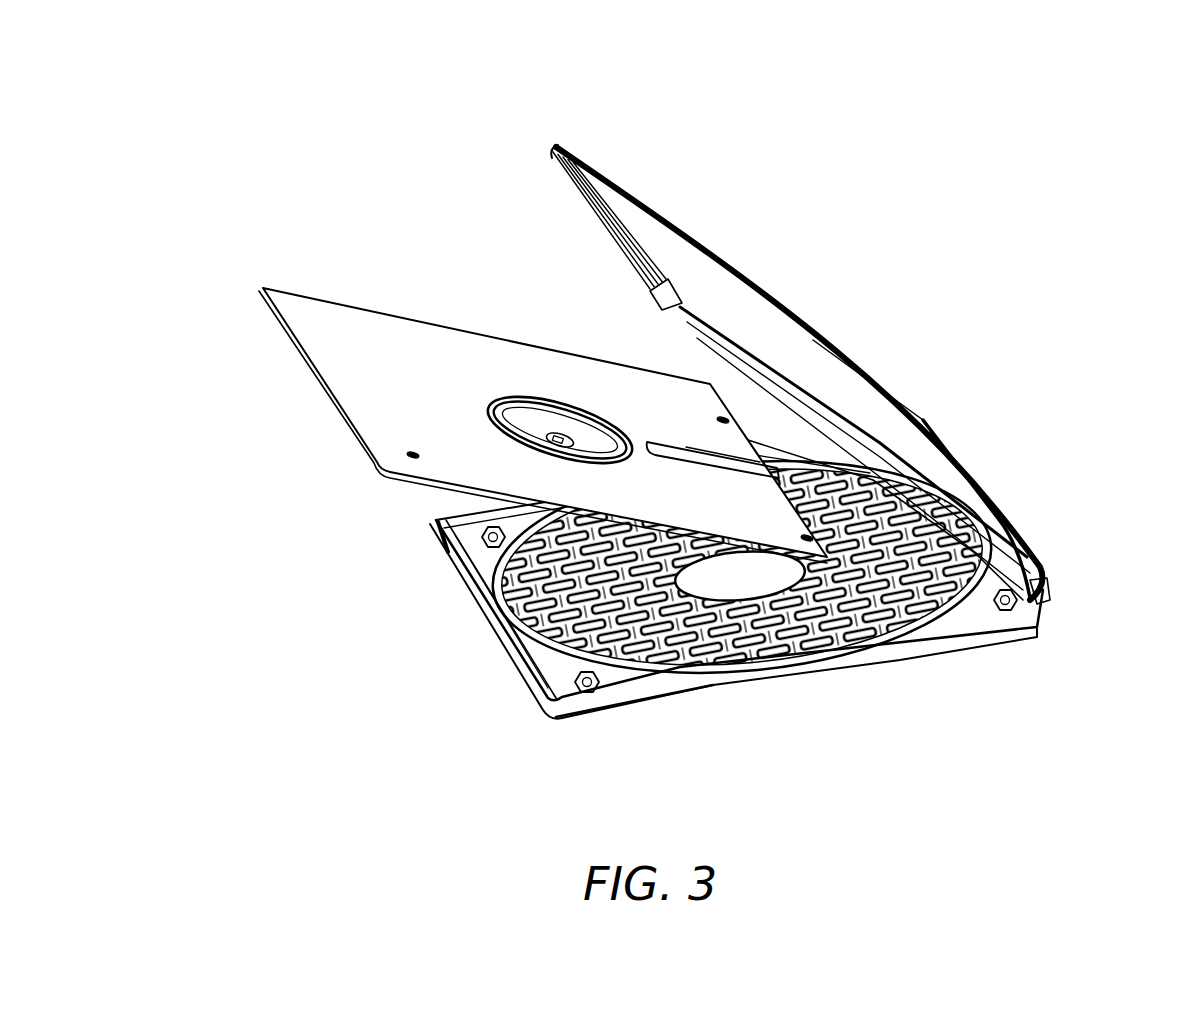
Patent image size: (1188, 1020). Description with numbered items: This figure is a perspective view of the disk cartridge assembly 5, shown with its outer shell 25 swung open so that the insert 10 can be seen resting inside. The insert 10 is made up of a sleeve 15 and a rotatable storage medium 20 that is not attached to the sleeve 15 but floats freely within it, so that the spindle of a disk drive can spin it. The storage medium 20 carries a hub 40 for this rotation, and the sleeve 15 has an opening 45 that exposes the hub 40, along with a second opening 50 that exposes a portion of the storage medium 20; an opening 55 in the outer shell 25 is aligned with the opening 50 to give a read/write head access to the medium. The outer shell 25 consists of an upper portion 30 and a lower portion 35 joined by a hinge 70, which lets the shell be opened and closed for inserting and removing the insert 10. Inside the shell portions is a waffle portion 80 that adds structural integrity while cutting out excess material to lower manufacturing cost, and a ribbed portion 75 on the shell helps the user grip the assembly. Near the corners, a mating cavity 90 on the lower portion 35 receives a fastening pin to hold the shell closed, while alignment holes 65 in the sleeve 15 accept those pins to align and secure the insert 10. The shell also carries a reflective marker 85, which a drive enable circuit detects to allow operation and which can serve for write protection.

The disk cartridge assembly 5 is at (952, 107).
The insert 10 is at (302, 410).
The sleeve 15 is at (380, 303).
The rotatable storage medium 20 is at (652, 446).
The outer shell 25 is at (683, 224).
The upper portion 30 is at (815, 332).
The lower portion 35 is at (707, 685).
The hub 40 is at (513, 397).
The opening 45 is at (525, 440).
The opening 50 is at (690, 450).
The opening 55 is at (995, 505).
The alignment holes 65 is at (324, 316).
The hinge 70 is at (1047, 592).
The ribbed portion 75 is at (577, 173).
The waffle portion 80 is at (822, 640).
The reflective marker 85 is at (980, 638).
The mating cavity 90 is at (450, 560).